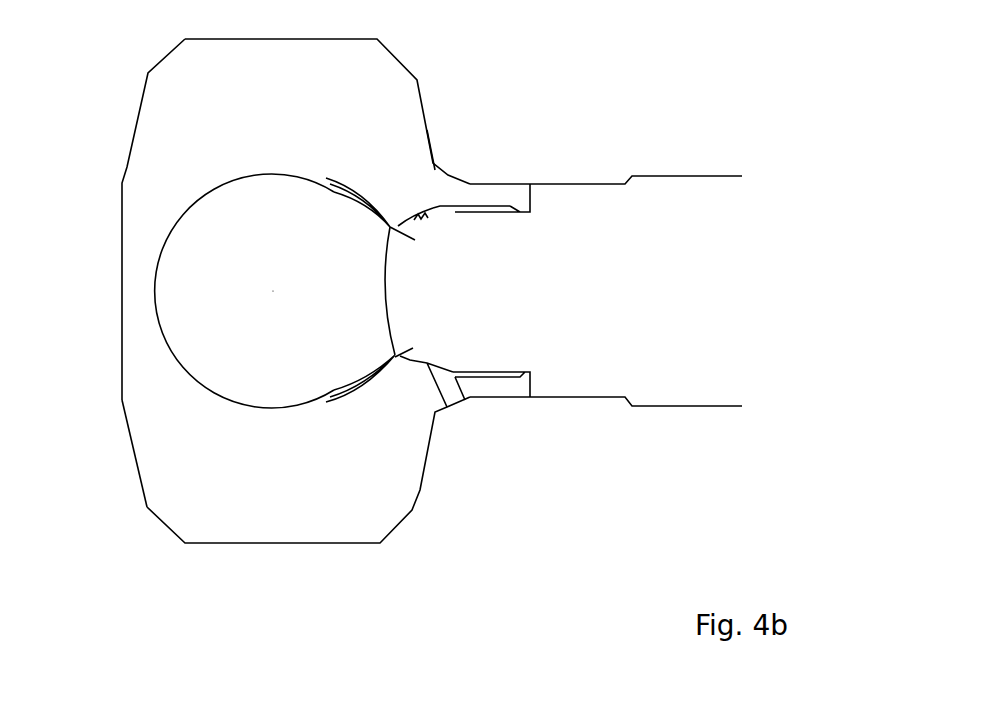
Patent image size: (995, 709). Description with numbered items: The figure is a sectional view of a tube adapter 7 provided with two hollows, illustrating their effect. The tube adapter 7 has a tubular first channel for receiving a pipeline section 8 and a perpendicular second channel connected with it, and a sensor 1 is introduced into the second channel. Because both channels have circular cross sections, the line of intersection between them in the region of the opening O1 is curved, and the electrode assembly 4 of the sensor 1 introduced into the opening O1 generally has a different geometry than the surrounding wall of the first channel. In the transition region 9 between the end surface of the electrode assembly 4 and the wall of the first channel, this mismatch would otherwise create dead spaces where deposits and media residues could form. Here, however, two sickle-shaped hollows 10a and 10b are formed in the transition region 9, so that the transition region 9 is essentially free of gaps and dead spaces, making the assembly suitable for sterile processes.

The sensor 1 is at (569, 208).
The electrode assembly 4 is at (358, 307).
The tube adapter 7 is at (76, 136).
The pipeline section 8 is at (134, 450).
The transition region 9 is at (373, 262).
The hollow 10a is at (380, 363).
The hollow 10b is at (390, 226).
The opening O1 is at (336, 258).